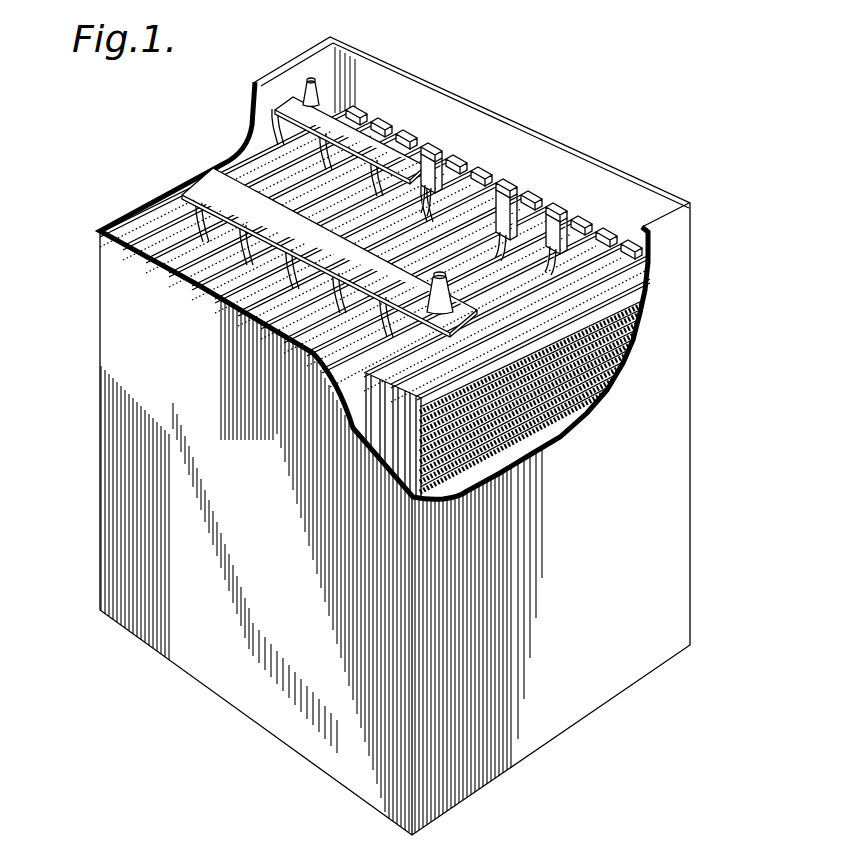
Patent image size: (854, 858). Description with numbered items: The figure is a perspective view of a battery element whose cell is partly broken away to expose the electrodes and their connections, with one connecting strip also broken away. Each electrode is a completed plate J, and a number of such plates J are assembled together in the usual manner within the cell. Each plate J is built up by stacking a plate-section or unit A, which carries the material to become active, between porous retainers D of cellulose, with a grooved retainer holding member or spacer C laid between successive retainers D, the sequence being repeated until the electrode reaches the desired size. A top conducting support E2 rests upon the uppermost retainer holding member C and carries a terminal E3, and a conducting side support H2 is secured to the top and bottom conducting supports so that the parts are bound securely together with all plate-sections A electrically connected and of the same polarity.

The completed plate J is at (137, 216).
The terminal E3 is at (507, 87).
The top conducting support E2 is at (648, 296).
The plate-section or unit A is at (548, 400).
The grooved retainer holding member or spacer C is at (560, 420).
The porous retainer D is at (548, 452).
The conducting side support H2 is at (410, 433).